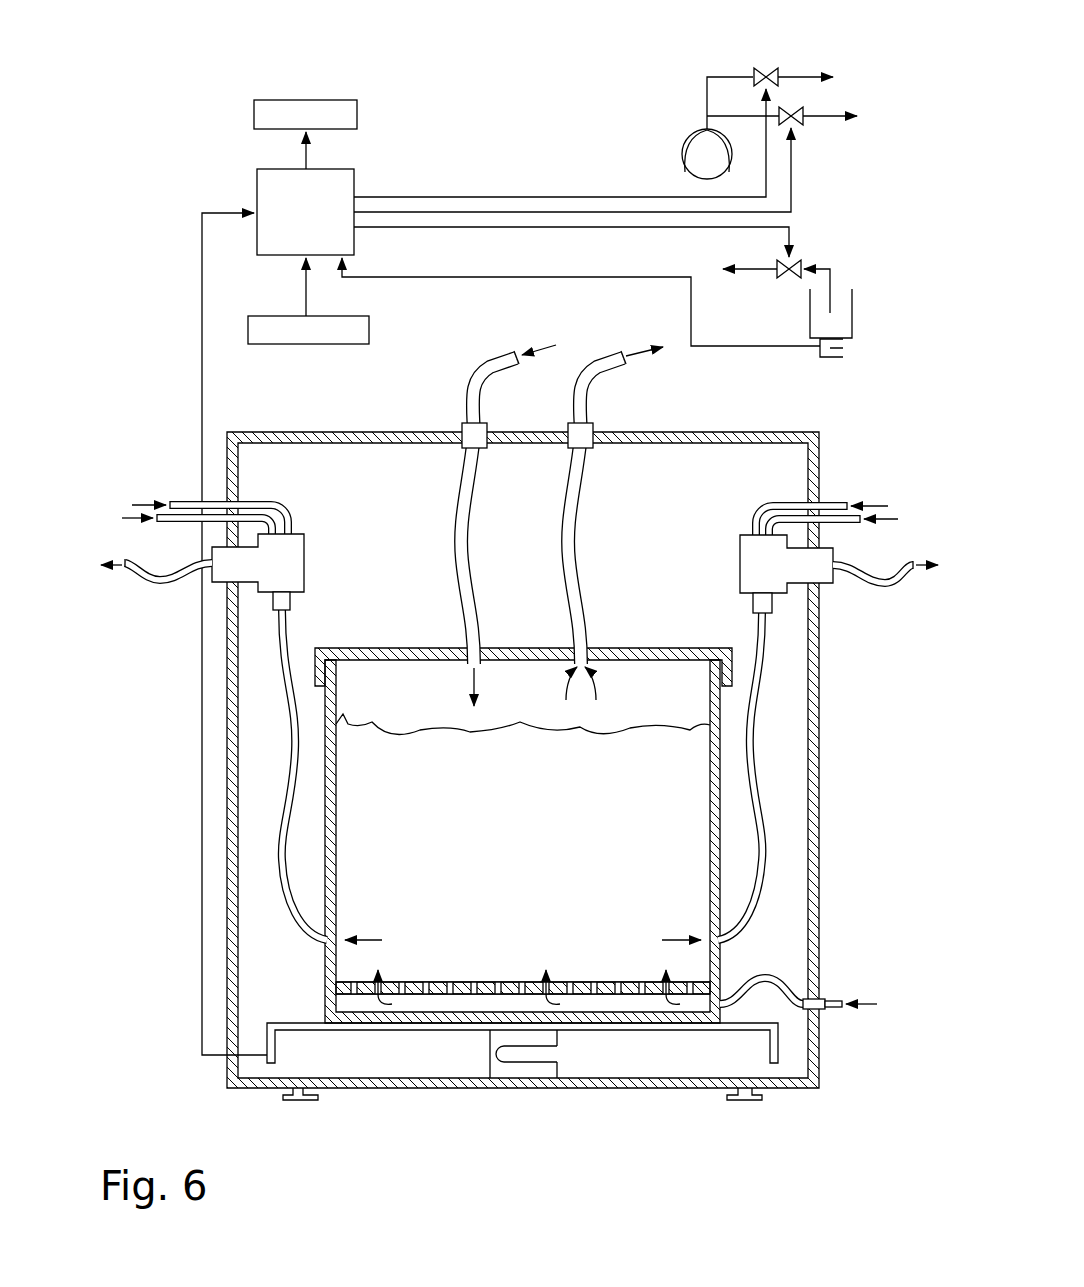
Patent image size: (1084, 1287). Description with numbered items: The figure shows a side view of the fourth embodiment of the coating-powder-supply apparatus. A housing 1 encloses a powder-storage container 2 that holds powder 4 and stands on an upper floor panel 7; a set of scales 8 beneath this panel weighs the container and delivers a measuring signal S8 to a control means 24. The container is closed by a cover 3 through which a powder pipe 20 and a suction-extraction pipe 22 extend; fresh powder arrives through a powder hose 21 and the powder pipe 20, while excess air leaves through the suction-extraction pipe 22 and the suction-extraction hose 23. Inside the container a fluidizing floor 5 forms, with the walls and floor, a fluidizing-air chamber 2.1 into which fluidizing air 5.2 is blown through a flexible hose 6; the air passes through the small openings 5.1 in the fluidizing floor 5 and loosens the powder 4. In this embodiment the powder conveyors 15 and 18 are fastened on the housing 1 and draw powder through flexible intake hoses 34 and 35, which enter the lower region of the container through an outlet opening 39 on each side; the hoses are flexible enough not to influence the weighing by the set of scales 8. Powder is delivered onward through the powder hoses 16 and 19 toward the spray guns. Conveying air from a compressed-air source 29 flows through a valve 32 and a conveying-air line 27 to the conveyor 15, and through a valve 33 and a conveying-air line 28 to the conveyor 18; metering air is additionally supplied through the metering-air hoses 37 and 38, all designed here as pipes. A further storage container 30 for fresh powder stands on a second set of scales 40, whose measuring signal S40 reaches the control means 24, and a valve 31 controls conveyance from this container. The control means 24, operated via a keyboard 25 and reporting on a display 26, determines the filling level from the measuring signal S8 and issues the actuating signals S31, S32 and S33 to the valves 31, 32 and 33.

The housing 1 is at (268, 432).
The powder-storage container 2 is at (325, 768).
The fluidizing-air chamber 2.1 is at (636, 1012).
The cover 3 is at (373, 648).
The powder 4 is at (520, 728).
The fluidizing floor 5 is at (611, 965).
The fluidizing-air openings 5.1 is at (498, 982).
The fluidizing air 5.2 is at (628, 982).
The hose for fluidizing air 6 is at (757, 977).
The upper floor panel 7 is at (282, 1023).
The set of scales 8 is at (558, 1036).
The powder conveyor 15 is at (305, 548).
The powder hose 16 is at (175, 588).
The powder conveyor 18 is at (740, 550).
The powder hose 19 is at (862, 590).
The powder pipe 20 is at (470, 575).
The powder hose 21 is at (505, 350).
The suction-extraction pipe 22 is at (577, 575).
The suction-extraction hose 23 is at (612, 350).
The control means 24 is at (354, 176).
The keyboard 25 is at (369, 328).
The display 26 is at (357, 115).
The conveying-air line 27 is at (480, 294).
The conveying-air line 28 is at (825, 314).
The compressed-air source 29 is at (683, 147).
The fresh-powder container 30 is at (846, 290).
The valve 31 is at (801, 258).
The valve 32 is at (766, 66).
The valve 33 is at (803, 122).
The intake hose 34 is at (281, 808).
The intake hose 35 is at (763, 808).
The metering-air hose 37 is at (192, 522).
The metering-air hose 38 is at (838, 523).
The outlet opening 39 is at (708, 936).
The set of scales 40 is at (835, 357).
The measuring signal S8 is at (219, 634).
The actuating signal S31 is at (571, 242).
The actuating signal S32 is at (560, 145).
The actuating signal S33 is at (593, 170).
The measuring signal S40 is at (581, 304).